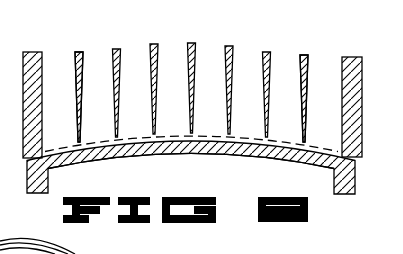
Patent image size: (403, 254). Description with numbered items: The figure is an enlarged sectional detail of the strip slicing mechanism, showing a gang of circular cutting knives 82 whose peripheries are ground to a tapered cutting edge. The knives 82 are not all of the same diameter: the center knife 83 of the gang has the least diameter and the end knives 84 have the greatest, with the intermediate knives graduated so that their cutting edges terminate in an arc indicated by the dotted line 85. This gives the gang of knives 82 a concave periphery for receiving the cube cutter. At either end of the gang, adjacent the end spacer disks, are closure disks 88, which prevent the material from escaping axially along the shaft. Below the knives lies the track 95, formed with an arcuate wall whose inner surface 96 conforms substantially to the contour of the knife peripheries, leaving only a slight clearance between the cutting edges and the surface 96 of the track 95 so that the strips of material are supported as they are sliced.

The circular cutting knives 82 is at (196, 77).
The center knife 83 is at (196, 55).
The end knives 84 is at (78, 70).
The dotted line 85 is at (72, 156).
The closure disks 88 is at (28, 128).
The track 95 is at (213, 149).
The inner surface 96 is at (148, 152).